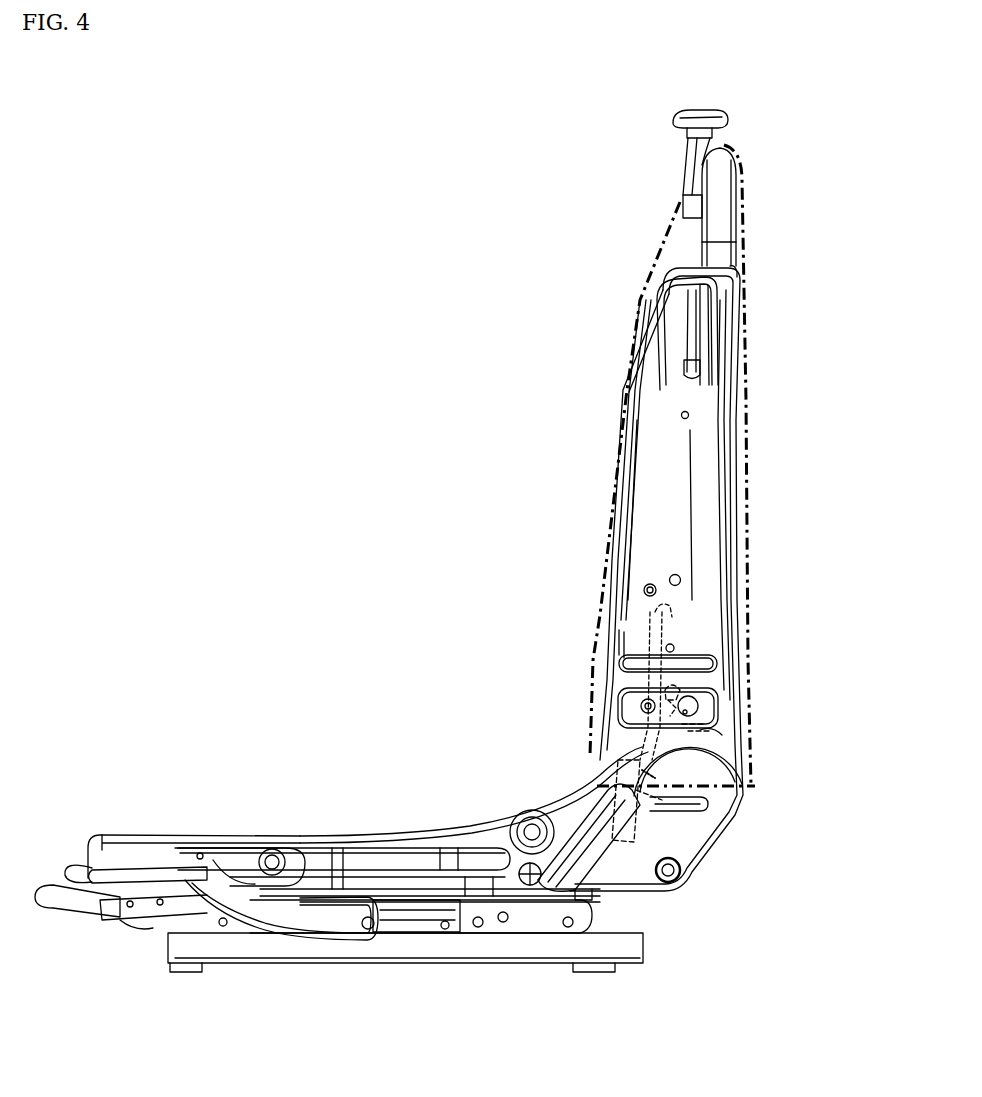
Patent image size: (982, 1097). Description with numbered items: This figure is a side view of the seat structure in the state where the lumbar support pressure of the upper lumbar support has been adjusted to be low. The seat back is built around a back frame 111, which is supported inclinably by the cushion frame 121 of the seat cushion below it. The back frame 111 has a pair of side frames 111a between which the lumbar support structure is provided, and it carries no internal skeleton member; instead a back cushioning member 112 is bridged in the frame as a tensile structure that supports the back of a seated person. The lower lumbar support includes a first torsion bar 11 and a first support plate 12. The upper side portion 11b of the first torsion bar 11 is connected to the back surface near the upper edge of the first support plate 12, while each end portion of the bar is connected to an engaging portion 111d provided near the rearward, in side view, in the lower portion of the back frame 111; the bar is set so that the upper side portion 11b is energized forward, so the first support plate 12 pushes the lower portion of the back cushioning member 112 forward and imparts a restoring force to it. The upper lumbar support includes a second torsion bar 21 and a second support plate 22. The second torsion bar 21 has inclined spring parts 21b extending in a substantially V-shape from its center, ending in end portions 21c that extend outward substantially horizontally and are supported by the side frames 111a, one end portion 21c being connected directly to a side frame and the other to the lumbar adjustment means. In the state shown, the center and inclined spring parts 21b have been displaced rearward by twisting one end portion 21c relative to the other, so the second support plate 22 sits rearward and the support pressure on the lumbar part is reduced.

The first torsion bar 11 is at (652, 790).
The back frame 111 is at (724, 213).
The side frame 111a is at (692, 470).
The engaging portion 111d is at (696, 798).
The upper side portion 11b is at (714, 728).
The back cushioning member 112 is at (628, 412).
The first support plate 12 is at (593, 773).
The cushion frame 121 is at (322, 836).
The second torsion bar 21 is at (672, 691).
The inclined spring part 21b is at (676, 703).
The end portion 21c is at (650, 772).
The second support plate 22 is at (651, 614).